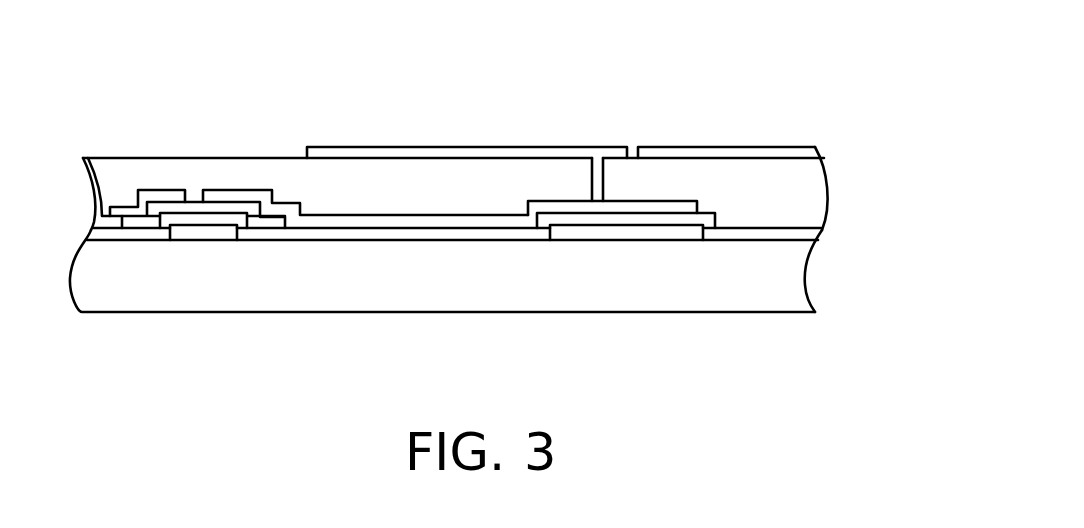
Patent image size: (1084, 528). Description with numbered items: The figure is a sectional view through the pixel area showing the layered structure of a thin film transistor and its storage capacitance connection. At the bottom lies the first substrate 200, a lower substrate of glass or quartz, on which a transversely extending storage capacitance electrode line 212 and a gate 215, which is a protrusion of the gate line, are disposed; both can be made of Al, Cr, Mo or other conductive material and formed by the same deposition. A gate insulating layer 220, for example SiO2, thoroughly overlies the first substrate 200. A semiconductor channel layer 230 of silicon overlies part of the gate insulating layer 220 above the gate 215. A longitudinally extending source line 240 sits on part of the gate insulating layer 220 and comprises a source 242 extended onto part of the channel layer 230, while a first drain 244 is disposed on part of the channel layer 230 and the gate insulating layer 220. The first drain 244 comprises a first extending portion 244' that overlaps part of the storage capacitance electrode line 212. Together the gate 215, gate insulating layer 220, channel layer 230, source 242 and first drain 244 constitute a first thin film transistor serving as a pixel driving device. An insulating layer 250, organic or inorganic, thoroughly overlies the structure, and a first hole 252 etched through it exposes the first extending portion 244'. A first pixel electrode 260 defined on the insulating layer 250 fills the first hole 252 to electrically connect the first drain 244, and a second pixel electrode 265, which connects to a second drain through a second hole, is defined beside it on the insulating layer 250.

The first substrate 200 is at (805, 287).
The storage capacitance electrode line 212 is at (623, 233).
The gate 215 is at (217, 233).
The gate insulating layer 220 is at (818, 236).
The channel layer 230 is at (155, 225).
The source line 240 is at (88, 160).
The source 242 is at (148, 190).
The first drain 244 is at (365, 139).
The first extending portion 244' is at (607, 151).
The insulating layer 250 is at (820, 182).
The first hole 252 is at (591, 180).
The first pixel electrode 260 is at (480, 147).
The second pixel electrode 265 is at (722, 147).